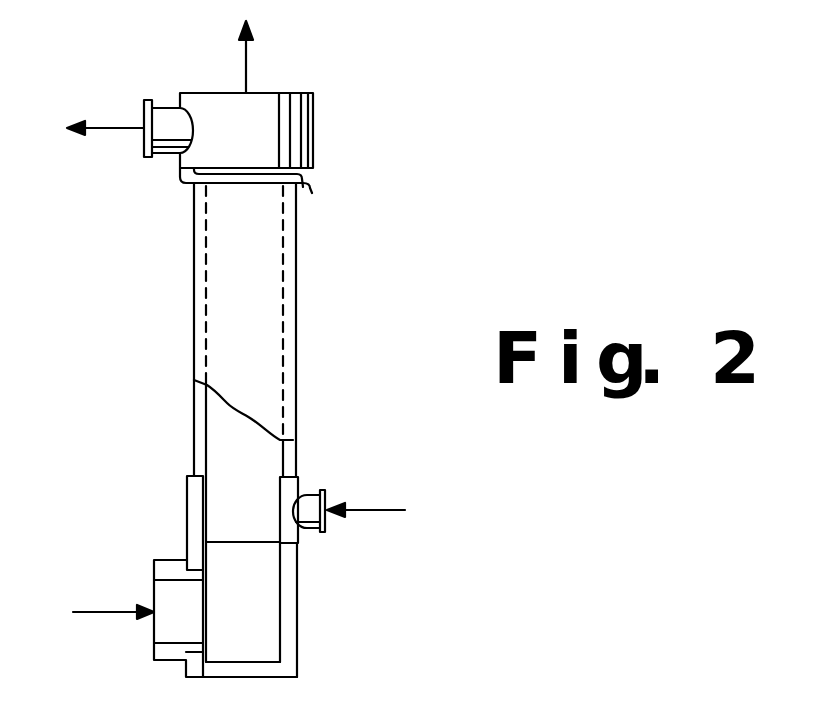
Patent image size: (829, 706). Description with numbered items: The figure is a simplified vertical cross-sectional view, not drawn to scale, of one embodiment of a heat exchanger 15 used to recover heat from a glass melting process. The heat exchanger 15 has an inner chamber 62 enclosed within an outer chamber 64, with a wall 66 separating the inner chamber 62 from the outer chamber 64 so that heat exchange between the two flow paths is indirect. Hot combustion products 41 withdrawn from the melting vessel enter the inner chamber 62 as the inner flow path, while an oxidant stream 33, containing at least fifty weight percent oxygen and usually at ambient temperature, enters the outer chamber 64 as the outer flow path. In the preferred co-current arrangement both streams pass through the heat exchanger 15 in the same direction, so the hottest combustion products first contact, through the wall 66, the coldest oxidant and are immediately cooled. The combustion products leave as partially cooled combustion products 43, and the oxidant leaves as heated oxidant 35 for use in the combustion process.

The heat exchanger 15 is at (226, 422).
The oxidant stream 33 is at (375, 512).
The heated oxidant 35 is at (112, 130).
The hot combustion products 41 is at (118, 607).
The partially cooled combustion products 43 is at (247, 55).
The inner chamber 62 is at (265, 318).
The outer chamber 64 is at (288, 370).
The wall 66 is at (288, 223).